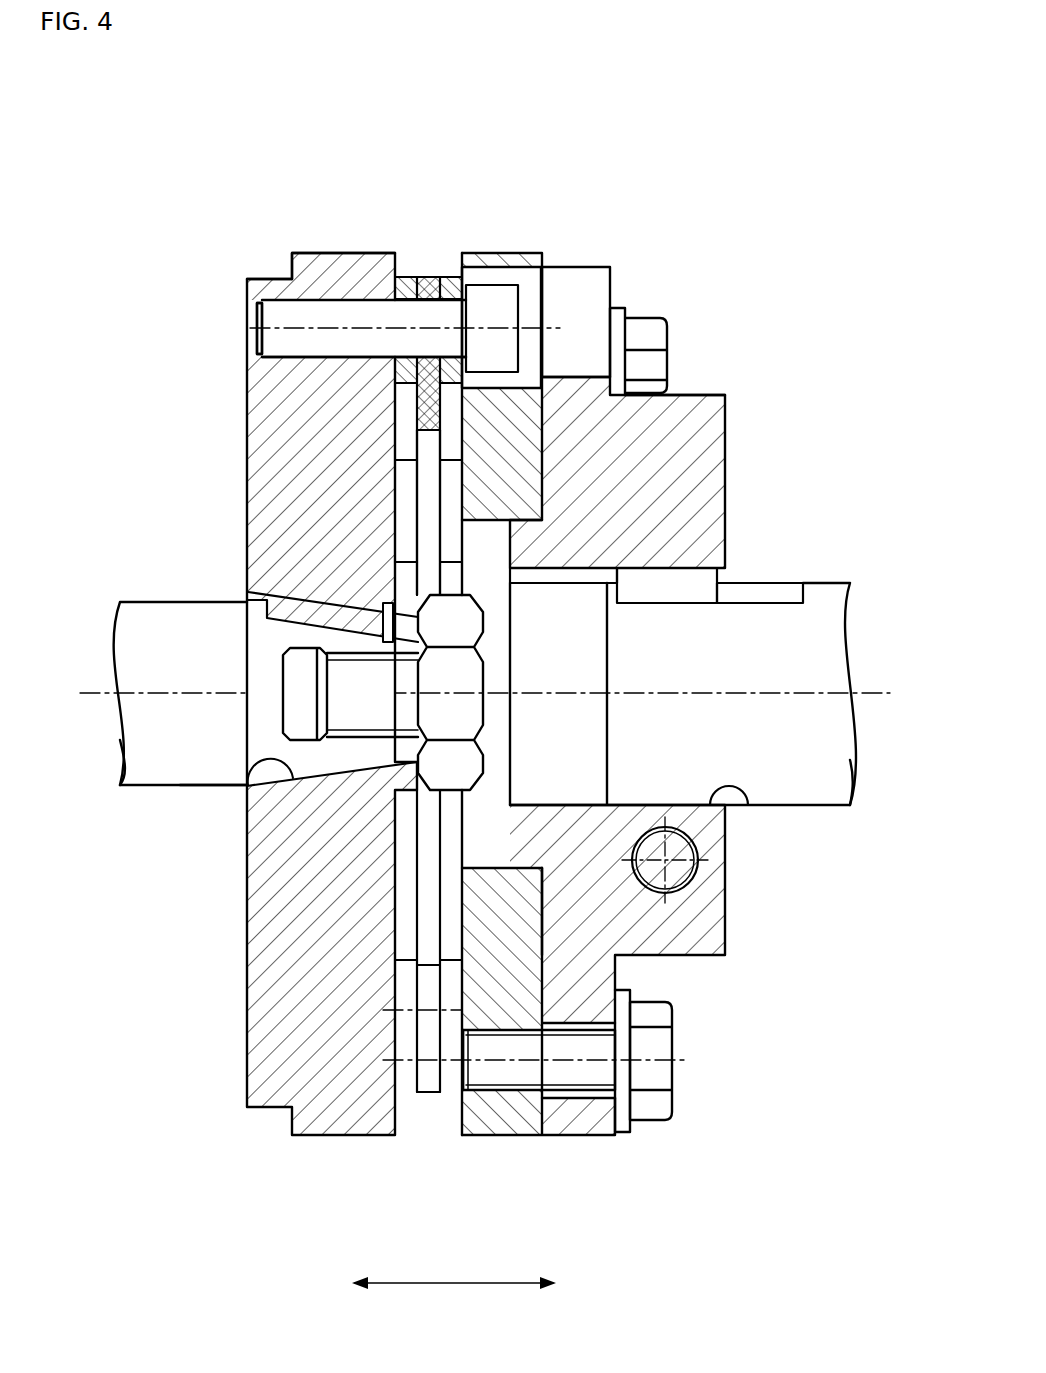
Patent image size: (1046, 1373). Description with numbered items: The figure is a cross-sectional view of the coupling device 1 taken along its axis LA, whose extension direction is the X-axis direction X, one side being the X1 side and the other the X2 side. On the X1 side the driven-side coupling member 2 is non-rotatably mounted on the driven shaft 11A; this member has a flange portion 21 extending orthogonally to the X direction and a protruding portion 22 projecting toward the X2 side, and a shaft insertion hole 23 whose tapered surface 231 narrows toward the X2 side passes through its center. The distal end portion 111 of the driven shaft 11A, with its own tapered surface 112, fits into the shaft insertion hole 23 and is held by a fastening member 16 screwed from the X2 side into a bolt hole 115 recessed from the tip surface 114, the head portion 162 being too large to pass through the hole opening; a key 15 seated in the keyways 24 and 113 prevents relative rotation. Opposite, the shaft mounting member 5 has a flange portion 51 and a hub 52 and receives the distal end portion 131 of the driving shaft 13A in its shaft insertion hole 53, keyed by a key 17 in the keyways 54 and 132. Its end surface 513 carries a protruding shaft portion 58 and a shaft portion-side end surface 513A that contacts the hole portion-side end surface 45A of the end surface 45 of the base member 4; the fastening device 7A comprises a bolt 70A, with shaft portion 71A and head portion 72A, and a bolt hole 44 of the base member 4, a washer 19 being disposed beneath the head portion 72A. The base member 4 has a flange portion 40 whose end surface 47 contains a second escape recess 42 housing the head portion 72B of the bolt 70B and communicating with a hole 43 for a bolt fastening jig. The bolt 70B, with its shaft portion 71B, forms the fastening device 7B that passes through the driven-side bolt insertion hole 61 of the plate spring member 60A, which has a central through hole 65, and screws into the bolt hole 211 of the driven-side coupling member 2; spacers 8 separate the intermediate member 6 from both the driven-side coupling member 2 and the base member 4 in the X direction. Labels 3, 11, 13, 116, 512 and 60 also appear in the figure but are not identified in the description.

The coupling device 1 is at (107, 104).
The driven-side coupling member 2 is at (303, 253).
The flange portion 21 is at (340, 253).
The bolt hole 211 is at (247, 282).
The fixing member 3 is at (620, 145).
The base member 4 is at (517, 255).
The shaft mounting member 5 is at (580, 265).
The intermediate member 6 is at (430, 276).
The driven-side bolt insertion hole 61 is at (437, 312).
The spacer 8 is at (404, 276).
The fastening device 7A is at (672, 1090).
The bolt 70A is at (673, 1060).
The shaft portion 71A is at (478, 1098).
The head portion 72A is at (673, 1122).
The fastening device 7B is at (257, 320).
The bolt 70B is at (258, 346).
The shaft portion 71B is at (262, 365).
The head portion 72B is at (490, 267).
The input shaft 11 is at (160, 600).
The driven shaft 11A is at (132, 790).
The distal end portion 111 is at (258, 796).
The tapered surface 112 is at (225, 786).
The keyway 113 is at (245, 600).
The tip surface 114 is at (390, 768).
The bolt hole 115 is at (290, 700).
The center pin shaft 116 is at (288, 738).
The output shaft 13 is at (838, 583).
The driving shaft 13A is at (830, 806).
The distal end portion 131 is at (738, 566).
The keyway 132 is at (795, 586).
The key 15 is at (293, 598).
The fastening member 16 is at (420, 437).
The head portion 162 is at (383, 1010).
The key 17 is at (682, 566).
The washer 19 is at (640, 1128).
The protruding portion 22 is at (398, 548).
The shaft insertion hole 23 is at (350, 772).
The tapered surface 231 is at (300, 778).
The keyway 24 is at (280, 594).
The flange portion 40 is at (695, 396).
The second escape recess 42 is at (632, 352).
The hole 43 is at (543, 312).
The bolt hole 44 is at (510, 1113).
The end surface 45 is at (556, 1112).
The hole portion-side end surface 45A is at (545, 907).
The end surface 47 is at (600, 432).
The flange portion 51 is at (583, 1122).
The bolt hole 512 is at (627, 1133).
The end surface 513 is at (548, 1112).
The shaft portion-side end surface 513A is at (545, 937).
The hub 52 is at (703, 957).
The shaft insertion hole 53 is at (750, 806).
The keyway 54 is at (718, 576).
The protruding shaft portion 58 is at (560, 452).
The plate 60 is at (422, 1094).
The plate spring member 60A is at (437, 1094).
The through hole 65 is at (395, 470).
The axis LA is at (92, 690).
The X-axis direction X is at (452, 1288).
The X1 side X1 is at (329, 1283).
The X2 side X2 is at (577, 1283).